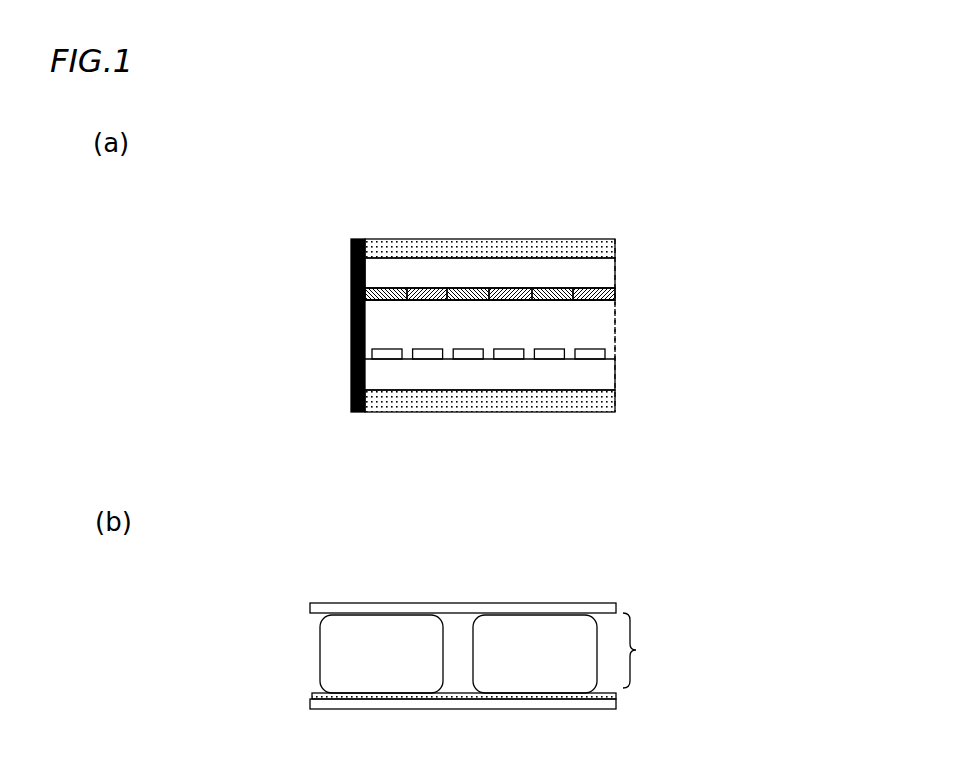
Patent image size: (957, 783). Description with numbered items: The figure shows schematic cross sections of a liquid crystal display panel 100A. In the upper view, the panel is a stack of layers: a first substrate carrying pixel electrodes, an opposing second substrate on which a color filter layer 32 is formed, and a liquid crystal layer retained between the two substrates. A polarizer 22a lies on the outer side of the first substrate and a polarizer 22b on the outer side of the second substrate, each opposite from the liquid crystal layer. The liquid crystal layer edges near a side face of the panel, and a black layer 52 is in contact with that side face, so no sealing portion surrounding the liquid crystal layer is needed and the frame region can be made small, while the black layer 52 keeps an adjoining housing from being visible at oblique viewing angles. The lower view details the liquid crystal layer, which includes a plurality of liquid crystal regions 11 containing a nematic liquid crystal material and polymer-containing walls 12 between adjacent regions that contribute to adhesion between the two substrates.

The liquid crystal display panel 100A is at (735, 243).
The black layer 52 is at (350, 312).
The polarizer 22b is at (612, 243).
The color filter layer 32 is at (505, 290).
The polarizer 22a is at (613, 400).
The polymer-containing walls 12 is at (453, 657).
The liquid crystal regions 11 is at (525, 675).